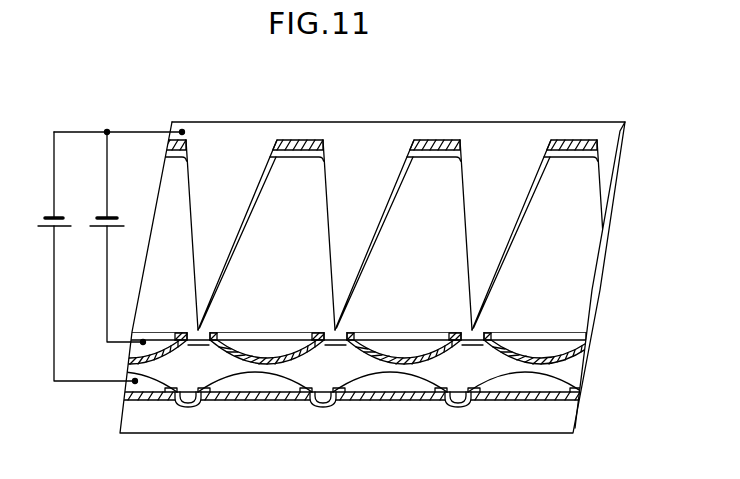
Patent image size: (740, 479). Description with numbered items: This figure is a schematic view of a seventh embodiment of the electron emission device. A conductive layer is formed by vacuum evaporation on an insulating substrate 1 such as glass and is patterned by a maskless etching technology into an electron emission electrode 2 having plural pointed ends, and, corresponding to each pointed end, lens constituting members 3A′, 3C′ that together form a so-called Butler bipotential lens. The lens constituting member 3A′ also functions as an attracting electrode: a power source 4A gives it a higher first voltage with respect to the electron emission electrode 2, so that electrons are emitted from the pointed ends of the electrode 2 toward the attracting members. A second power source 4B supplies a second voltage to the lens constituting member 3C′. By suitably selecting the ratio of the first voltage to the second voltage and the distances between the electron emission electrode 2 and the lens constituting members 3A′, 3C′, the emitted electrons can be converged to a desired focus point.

The insulating substrate 1 is at (575, 304).
The electron emission electrode 2 is at (508, 143).
The lens constituting member 3A' is at (353, 348).
The lens constituting member 3C' is at (346, 389).
The power source 4A is at (118, 230).
The power source 4B is at (66, 230).